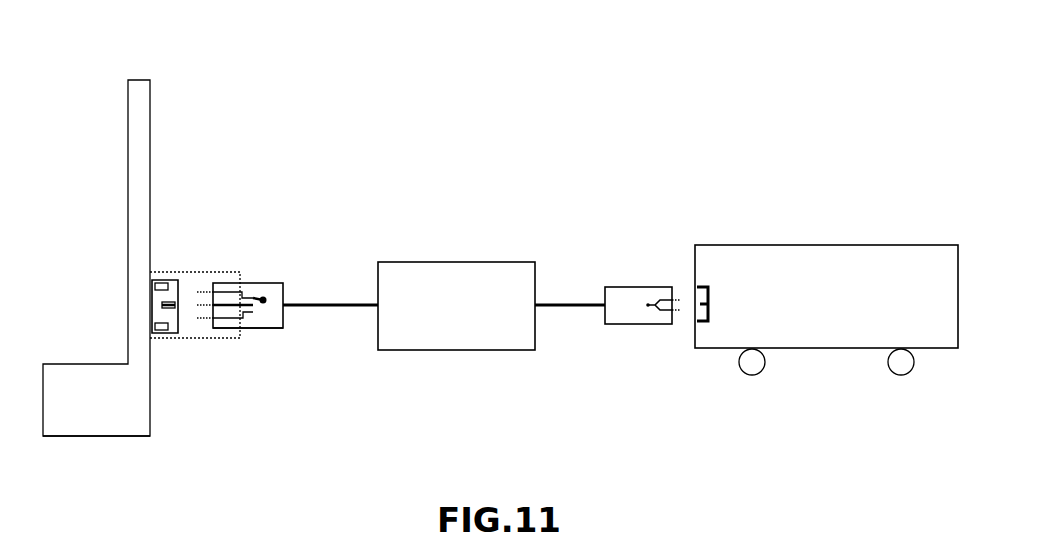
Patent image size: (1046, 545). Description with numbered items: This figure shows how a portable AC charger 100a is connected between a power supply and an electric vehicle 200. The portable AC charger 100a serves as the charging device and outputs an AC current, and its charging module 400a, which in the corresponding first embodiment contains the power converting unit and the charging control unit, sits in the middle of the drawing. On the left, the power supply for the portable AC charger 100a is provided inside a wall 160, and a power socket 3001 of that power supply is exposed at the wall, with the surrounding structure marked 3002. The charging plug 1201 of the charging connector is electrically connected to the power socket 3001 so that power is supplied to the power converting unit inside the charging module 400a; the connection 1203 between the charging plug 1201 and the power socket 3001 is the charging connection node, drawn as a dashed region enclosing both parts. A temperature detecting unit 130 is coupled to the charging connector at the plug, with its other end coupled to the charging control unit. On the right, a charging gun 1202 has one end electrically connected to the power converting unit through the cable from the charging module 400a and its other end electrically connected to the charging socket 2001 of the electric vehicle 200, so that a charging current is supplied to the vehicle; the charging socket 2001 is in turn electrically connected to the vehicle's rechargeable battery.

The portable AC charger 100a is at (455, 208).
The temperature detecting unit 130 is at (258, 282).
The wall 160 is at (124, 410).
The electric vehicle 200 is at (826, 310).
The charging module 400a is at (456, 306).
The charging plug 1201 is at (250, 332).
The charging gun 1202 is at (633, 290).
The connection 1203 is at (220, 272).
The charging socket 2001 is at (705, 292).
The power socket 3001 is at (168, 278).
The wall 3002 is at (138, 376).